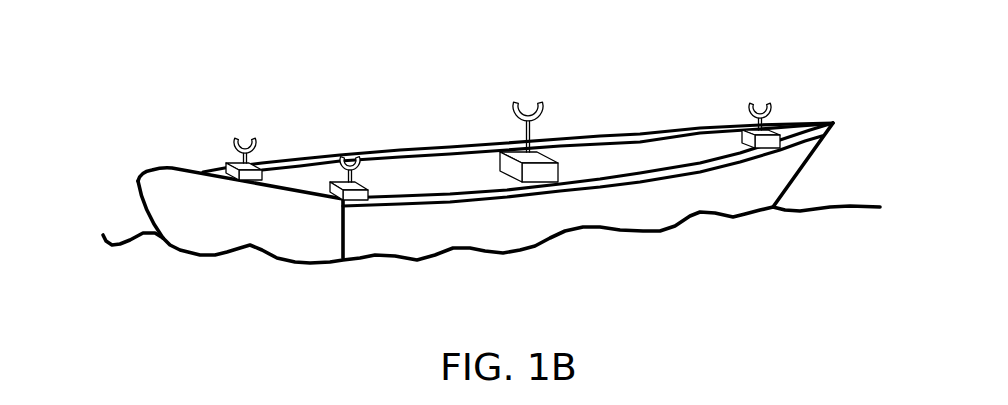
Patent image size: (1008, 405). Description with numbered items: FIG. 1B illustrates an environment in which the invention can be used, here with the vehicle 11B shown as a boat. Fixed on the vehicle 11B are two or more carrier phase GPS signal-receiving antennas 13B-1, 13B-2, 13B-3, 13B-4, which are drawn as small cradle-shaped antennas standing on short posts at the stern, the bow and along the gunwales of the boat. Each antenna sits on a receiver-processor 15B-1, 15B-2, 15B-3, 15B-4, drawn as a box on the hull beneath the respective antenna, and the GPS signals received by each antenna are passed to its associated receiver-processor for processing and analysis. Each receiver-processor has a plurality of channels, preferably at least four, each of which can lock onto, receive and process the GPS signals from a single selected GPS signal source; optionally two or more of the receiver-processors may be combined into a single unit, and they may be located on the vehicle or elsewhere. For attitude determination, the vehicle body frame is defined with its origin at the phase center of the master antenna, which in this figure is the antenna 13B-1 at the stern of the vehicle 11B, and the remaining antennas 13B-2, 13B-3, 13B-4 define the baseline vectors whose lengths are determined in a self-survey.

The vehicle 11B is at (632, 127).
The GPS signal-receiving antenna 13B-1 is at (240, 136).
The GPS signal-receiving antenna 13B-2 is at (772, 110).
The GPS signal-receiving antenna 13B-3 is at (360, 158).
The GPS signal-receiving antenna 13B-4 is at (543, 107).
The receiver-processor 15B-1 is at (228, 165).
The receiver-processor 15B-2 is at (782, 132).
The receiver-processor 15B-3 is at (365, 199).
The receiver-processor 15B-4 is at (558, 163).